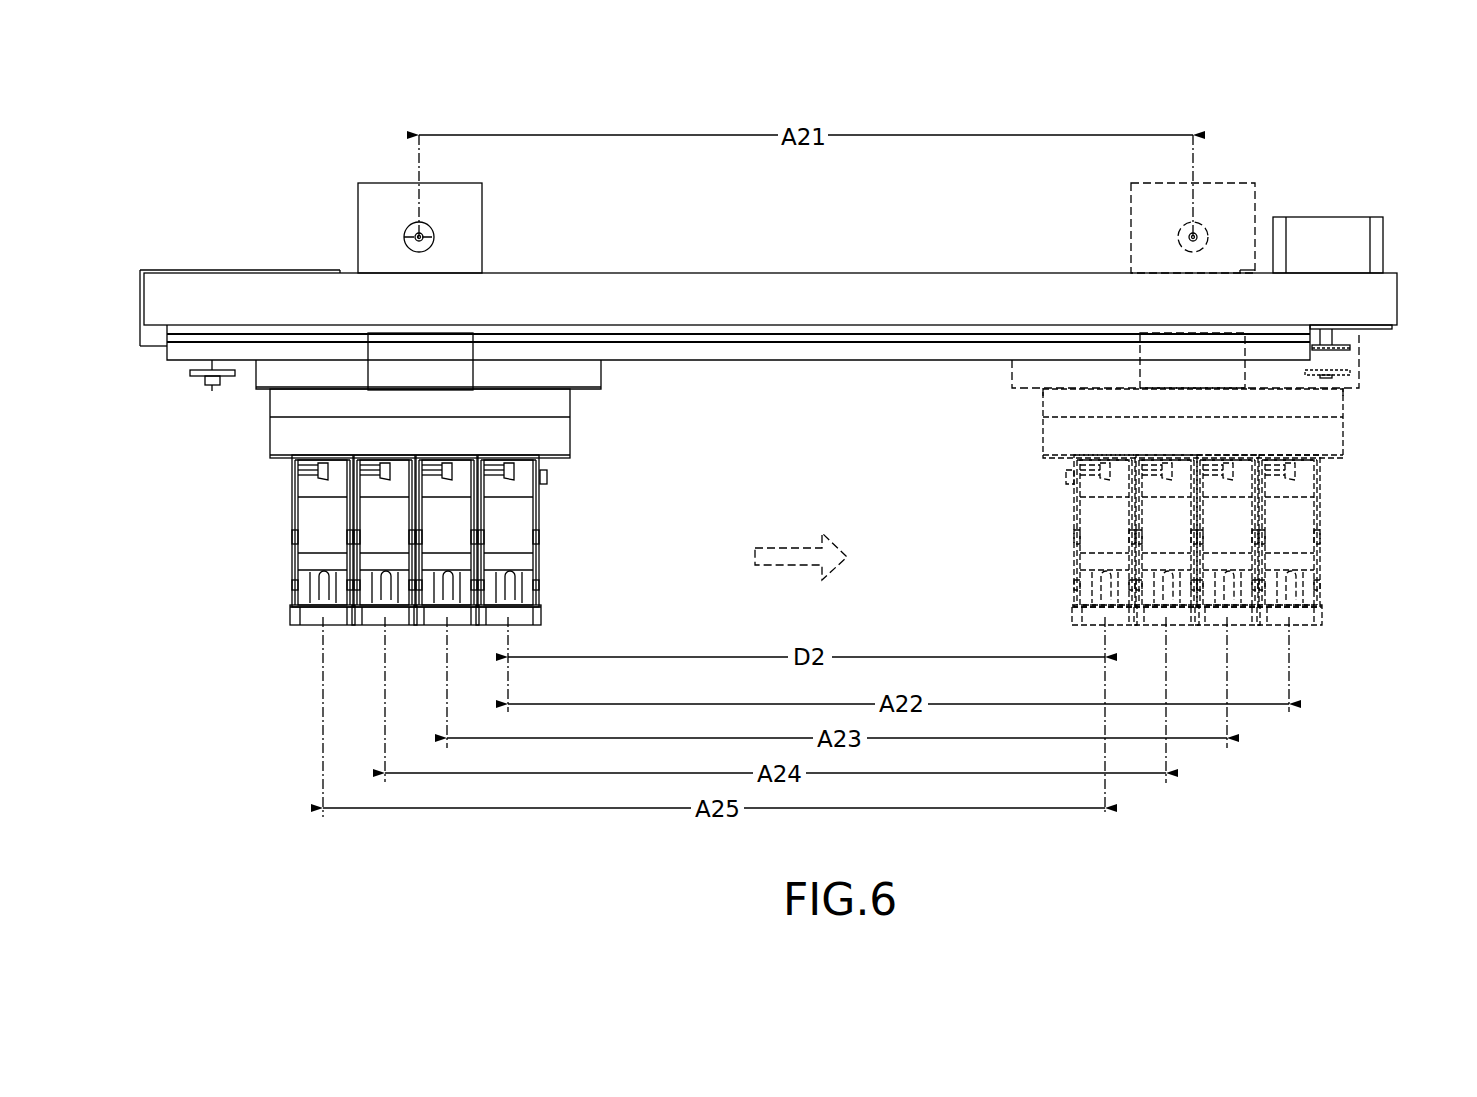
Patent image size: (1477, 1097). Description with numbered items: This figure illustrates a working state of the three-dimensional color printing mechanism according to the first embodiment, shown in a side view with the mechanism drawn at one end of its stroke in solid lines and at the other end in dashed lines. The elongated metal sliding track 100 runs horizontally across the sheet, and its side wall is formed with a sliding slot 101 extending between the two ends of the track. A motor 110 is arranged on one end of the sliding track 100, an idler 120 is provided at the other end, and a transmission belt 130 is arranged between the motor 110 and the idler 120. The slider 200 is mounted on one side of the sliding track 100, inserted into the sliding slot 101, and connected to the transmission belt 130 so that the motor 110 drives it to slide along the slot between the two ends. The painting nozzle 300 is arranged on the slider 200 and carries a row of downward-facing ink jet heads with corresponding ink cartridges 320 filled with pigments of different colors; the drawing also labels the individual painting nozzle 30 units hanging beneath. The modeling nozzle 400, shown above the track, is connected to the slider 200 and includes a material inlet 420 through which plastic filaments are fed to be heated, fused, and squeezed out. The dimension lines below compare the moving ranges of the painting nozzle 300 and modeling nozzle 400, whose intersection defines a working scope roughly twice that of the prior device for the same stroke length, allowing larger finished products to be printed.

The sliding track 100 is at (697, 297).
The sliding slot 101 is at (881, 347).
The motor 110 is at (1327, 233).
The idler 120 is at (213, 385).
The transmission belt 130 is at (855, 368).
The slider 200 is at (455, 376).
The painting nozzle 300 is at (463, 554).
The ink cartridge 320 is at (520, 522).
The painting nozzle 30 is at (308, 622).
The modeling nozzle 400 is at (365, 199).
The material inlet 420 is at (405, 237).